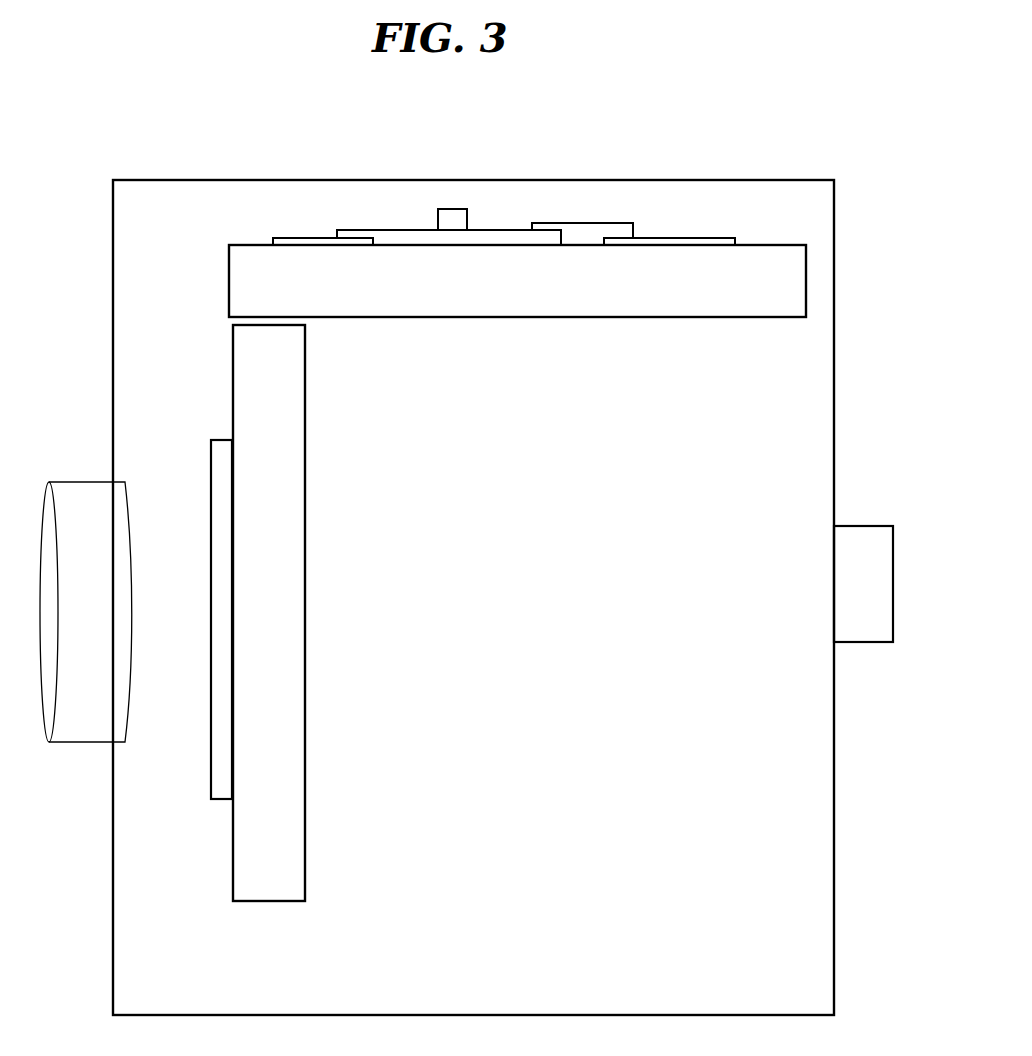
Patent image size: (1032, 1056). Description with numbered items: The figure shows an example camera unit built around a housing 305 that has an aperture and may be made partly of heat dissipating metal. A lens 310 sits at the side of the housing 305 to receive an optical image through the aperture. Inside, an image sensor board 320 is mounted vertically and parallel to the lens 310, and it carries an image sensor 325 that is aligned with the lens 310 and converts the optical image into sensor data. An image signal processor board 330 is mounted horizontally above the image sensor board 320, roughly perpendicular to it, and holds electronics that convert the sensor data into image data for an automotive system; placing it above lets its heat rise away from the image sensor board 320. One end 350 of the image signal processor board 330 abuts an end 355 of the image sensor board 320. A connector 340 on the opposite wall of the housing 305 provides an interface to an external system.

The housing 305 is at (172, 180).
The lens 310 is at (88, 482).
The image sensor board 320 is at (305, 648).
The image sensor 325 is at (213, 440).
The image signal processor board 330 is at (478, 297).
The connector 340 is at (852, 526).
The end of the image signal processor board 350 is at (247, 266).
The end of the image sensor board 355 is at (274, 353).